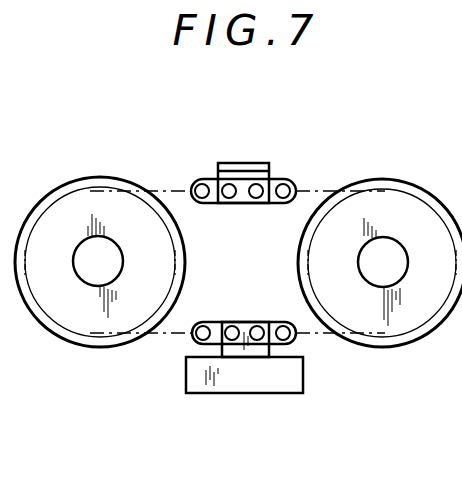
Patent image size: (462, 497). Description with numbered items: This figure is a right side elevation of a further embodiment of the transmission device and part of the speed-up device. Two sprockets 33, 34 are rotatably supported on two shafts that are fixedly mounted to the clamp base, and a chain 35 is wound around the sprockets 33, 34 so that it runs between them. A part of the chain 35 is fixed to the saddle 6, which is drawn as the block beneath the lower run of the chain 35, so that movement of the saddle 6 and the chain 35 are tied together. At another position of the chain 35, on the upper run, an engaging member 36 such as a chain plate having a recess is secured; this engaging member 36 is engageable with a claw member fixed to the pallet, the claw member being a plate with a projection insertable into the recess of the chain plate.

The saddle 6 is at (252, 388).
The sprocket 33 is at (93, 203).
The sprocket 34 is at (387, 208).
The chain 35 is at (157, 189).
The engaging member 36 is at (240, 163).